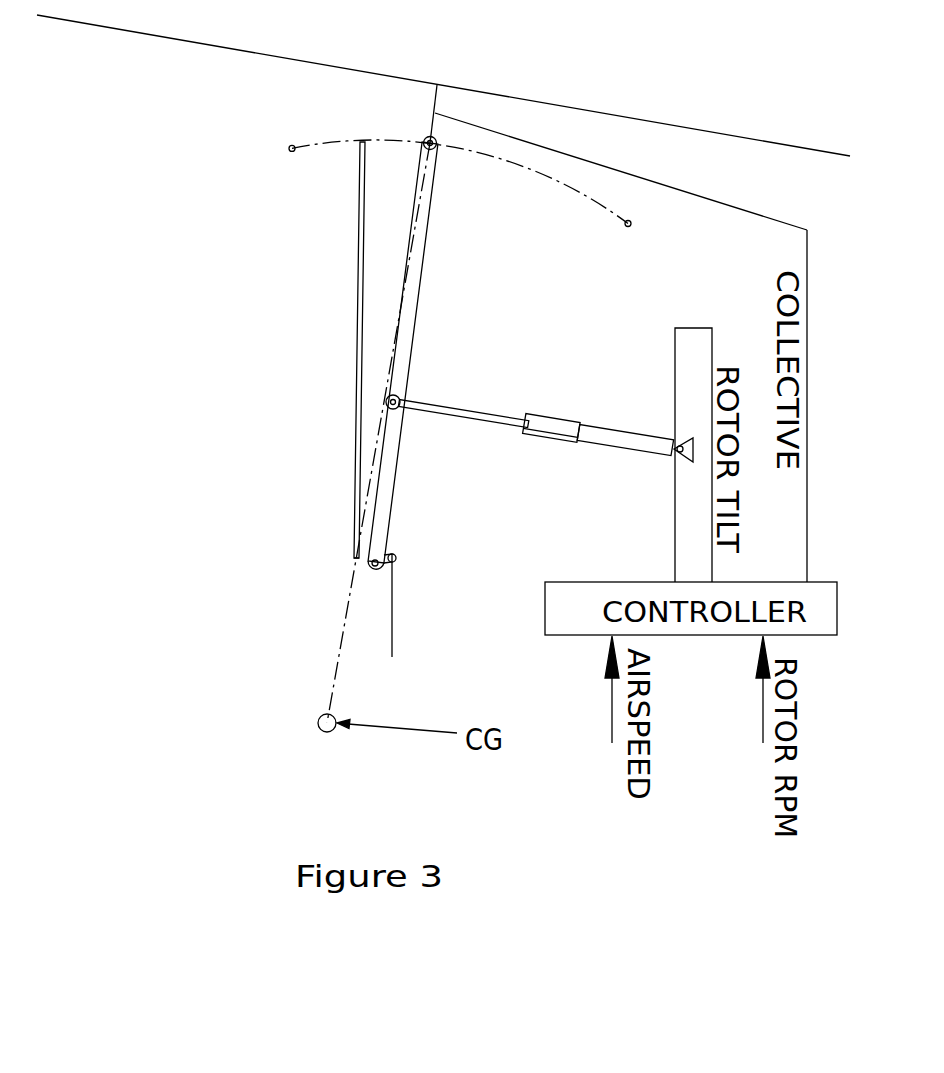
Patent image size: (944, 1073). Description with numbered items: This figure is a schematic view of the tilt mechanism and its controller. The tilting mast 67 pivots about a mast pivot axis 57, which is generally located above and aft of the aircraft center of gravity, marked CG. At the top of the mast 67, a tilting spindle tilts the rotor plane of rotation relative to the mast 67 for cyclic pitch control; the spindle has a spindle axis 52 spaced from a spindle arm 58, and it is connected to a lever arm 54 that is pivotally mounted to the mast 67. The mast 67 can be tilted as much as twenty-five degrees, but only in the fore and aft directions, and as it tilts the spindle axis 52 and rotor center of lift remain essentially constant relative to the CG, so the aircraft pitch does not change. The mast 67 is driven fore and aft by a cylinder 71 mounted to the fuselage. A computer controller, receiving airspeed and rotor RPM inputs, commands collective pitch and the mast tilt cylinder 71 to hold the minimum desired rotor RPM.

The spindle axis 52 is at (435, 113).
The lever arm 54 is at (355, 562).
The mast pivot axis 57 is at (367, 565).
The spindle arm 58 is at (385, 145).
The tilting mast 67 is at (423, 272).
The cylinder 71 is at (603, 428).